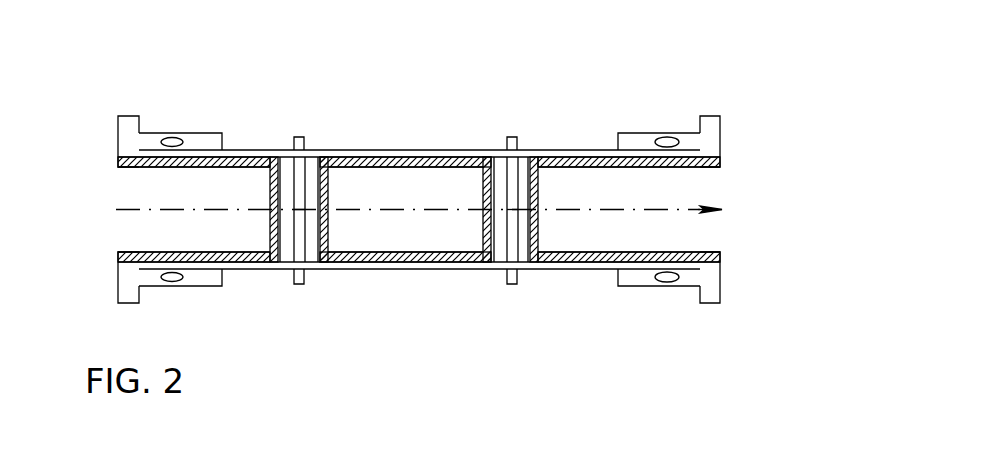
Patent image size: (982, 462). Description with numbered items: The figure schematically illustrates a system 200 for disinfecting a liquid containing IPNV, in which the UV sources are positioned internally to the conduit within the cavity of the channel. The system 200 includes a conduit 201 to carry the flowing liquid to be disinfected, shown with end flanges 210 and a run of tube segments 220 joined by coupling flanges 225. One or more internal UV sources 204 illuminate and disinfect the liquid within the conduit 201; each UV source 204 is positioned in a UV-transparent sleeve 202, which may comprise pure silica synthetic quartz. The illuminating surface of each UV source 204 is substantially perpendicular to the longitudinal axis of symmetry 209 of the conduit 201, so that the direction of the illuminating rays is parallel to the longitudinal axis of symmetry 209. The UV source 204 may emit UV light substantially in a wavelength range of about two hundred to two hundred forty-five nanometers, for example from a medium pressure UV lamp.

The system 200 is at (675, 38).
The conduit 201 is at (378, 149).
The UV-transparent sleeve 202 is at (272, 165).
The internal UV source 204 is at (299, 178).
The longitudinal axis of symmetry 209 is at (120, 210).
The end flange 210 is at (638, 133).
The tube segment 220 is at (350, 160).
The coupling flange 225 is at (273, 226).